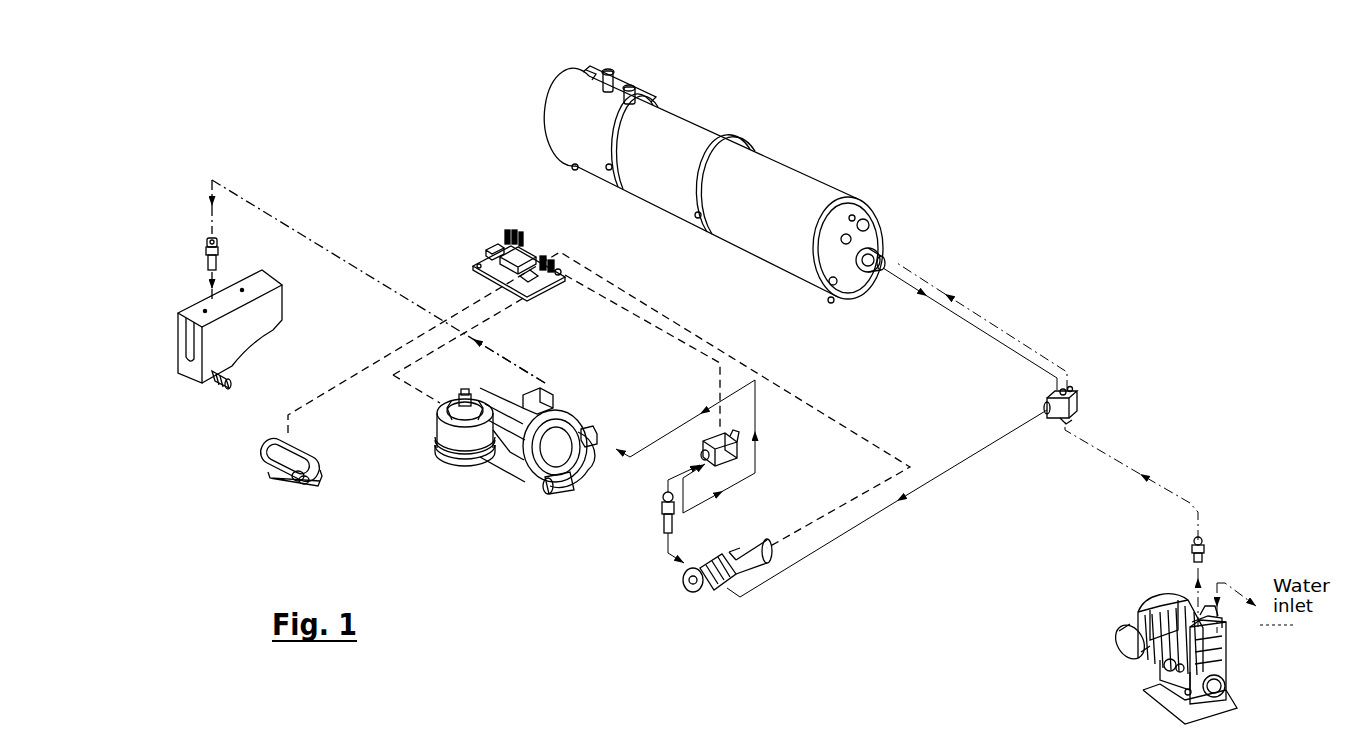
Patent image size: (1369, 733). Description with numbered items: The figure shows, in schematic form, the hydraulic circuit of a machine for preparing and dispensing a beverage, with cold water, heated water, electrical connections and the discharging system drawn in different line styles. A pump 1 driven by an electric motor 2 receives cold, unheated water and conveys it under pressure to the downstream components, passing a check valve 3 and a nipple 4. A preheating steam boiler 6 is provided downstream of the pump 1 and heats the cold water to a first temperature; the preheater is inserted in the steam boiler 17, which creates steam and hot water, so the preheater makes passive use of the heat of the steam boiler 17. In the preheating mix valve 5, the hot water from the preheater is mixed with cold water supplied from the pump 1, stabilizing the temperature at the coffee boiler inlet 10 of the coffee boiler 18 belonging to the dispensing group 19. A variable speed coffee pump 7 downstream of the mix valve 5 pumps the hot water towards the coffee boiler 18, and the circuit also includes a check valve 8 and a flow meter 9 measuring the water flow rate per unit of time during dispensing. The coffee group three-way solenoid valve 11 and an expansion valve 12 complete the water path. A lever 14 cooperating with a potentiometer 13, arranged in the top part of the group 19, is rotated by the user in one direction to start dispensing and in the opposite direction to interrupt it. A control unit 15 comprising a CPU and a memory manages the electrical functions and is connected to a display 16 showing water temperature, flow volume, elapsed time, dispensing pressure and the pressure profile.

The pump 1 is at (1180, 662).
The electric motor 2 is at (1120, 647).
The check valve 3 is at (1178, 673).
The nipple 4 is at (1210, 547).
The preheating mix valve 5 is at (1075, 395).
The preheating steam boiler 6 is at (878, 255).
The coffee pump 7 is at (708, 598).
The check valve 8 is at (648, 532).
The flow meter 9 is at (702, 447).
The coffee boiler inlet 10 is at (560, 483).
The coffee group three-way solenoid valve 11 is at (493, 450).
The expansion valve 12 is at (203, 253).
The potentiometer 13 is at (447, 410).
The lever 14 is at (443, 435).
The control unit 15 is at (490, 257).
The display 16 is at (267, 473).
The steam boiler 17 is at (747, 184).
The coffee boiler 18 is at (517, 470).
The dispensing group 19 is at (438, 455).